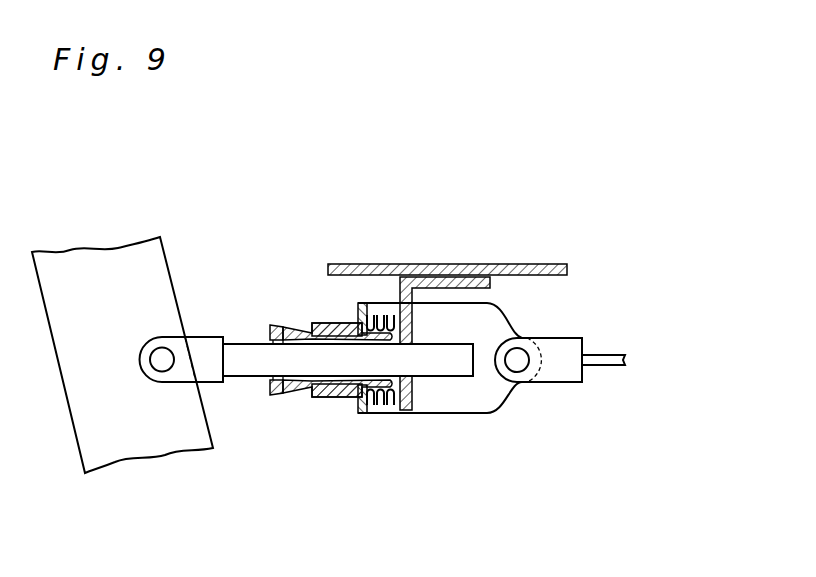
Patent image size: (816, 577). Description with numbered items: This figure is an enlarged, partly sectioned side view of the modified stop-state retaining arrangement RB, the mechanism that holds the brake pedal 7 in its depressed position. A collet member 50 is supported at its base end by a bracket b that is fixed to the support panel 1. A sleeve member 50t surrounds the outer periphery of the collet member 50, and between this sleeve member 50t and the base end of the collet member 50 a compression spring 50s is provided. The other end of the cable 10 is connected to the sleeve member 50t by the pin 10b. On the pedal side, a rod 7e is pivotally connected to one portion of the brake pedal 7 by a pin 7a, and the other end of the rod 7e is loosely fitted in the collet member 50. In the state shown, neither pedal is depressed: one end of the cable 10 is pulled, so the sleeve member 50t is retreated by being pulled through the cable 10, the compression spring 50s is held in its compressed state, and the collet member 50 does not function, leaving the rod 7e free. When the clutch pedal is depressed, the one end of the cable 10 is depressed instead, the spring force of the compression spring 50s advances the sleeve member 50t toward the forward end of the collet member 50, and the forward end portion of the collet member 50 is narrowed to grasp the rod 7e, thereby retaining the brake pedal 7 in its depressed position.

The brake pedal 7 is at (118, 250).
The pin 7a is at (163, 352).
The rod 7e is at (250, 345).
The collet member 50 is at (273, 395).
The sleeve member 50t is at (327, 397).
The compression spring 50s is at (376, 313).
The pin 10b is at (522, 365).
The bracket b is at (490, 282).
The support panel 1 is at (568, 268).
The cable 10 is at (612, 358).
The stop-state retaining arrangement RB is at (440, 215).